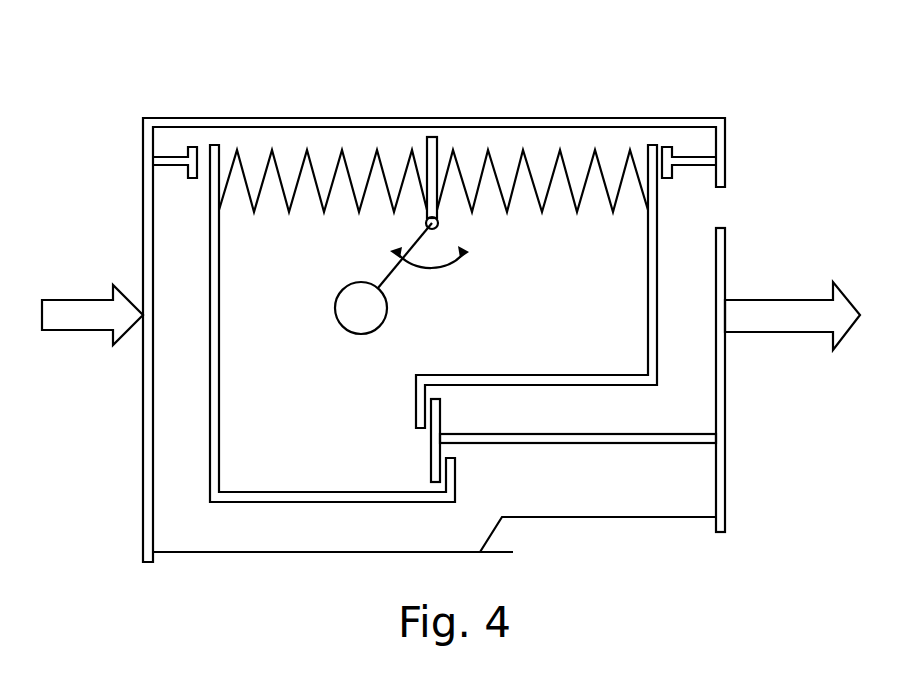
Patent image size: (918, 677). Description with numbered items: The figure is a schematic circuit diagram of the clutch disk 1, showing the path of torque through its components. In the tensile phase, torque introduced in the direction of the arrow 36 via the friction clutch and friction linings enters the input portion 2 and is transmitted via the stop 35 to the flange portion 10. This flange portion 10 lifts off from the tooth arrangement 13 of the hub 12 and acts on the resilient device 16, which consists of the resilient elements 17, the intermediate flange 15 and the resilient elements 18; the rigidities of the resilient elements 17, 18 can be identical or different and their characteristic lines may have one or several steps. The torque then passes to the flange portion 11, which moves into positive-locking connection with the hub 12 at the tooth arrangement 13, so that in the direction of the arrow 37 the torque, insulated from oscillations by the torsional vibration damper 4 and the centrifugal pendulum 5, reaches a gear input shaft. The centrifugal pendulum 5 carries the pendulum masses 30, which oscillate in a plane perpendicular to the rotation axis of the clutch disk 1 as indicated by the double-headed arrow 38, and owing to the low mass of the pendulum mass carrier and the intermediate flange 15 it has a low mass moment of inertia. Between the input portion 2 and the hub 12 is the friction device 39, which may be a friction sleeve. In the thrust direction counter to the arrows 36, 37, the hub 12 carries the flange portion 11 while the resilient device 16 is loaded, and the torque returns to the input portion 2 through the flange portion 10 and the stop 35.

The clutch disk 1 is at (747, 83).
The input portion 2 is at (143, 191).
The torsional vibration damper 4 is at (518, 107).
The centrifugal pendulum 5 is at (472, 260).
The flange portion 10 is at (217, 405).
The flange portion 11 is at (654, 305).
The hub 12 is at (492, 441).
The tooth arrangement 13 is at (425, 457).
The intermediate flange 15 is at (437, 148).
The resilient device 16 is at (418, 128).
The resilient elements 17 is at (343, 155).
The resilient elements 18 is at (593, 155).
The pendulum masses 30 is at (361, 310).
The stop 35 is at (203, 150).
The arrow 36 is at (92, 315).
The arrow 37 is at (792, 316).
The double-headed arrow 38 is at (432, 268).
The friction device 39 is at (473, 540).